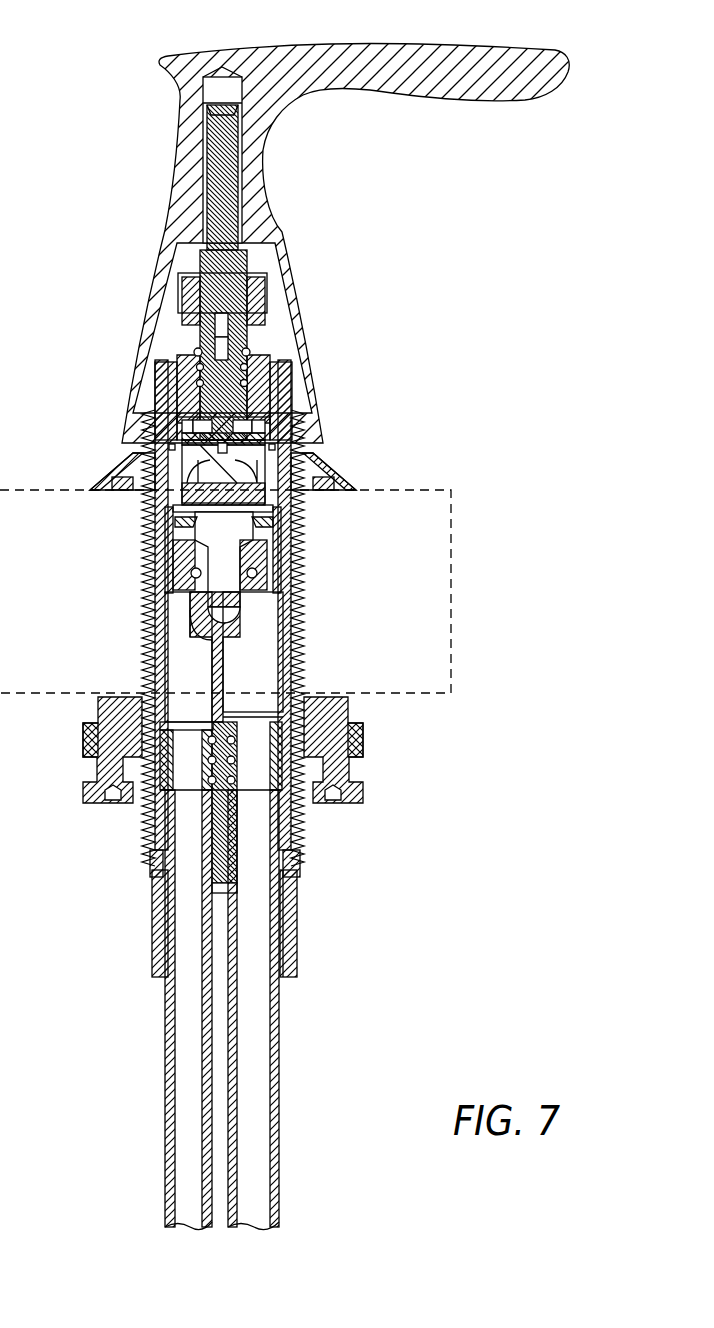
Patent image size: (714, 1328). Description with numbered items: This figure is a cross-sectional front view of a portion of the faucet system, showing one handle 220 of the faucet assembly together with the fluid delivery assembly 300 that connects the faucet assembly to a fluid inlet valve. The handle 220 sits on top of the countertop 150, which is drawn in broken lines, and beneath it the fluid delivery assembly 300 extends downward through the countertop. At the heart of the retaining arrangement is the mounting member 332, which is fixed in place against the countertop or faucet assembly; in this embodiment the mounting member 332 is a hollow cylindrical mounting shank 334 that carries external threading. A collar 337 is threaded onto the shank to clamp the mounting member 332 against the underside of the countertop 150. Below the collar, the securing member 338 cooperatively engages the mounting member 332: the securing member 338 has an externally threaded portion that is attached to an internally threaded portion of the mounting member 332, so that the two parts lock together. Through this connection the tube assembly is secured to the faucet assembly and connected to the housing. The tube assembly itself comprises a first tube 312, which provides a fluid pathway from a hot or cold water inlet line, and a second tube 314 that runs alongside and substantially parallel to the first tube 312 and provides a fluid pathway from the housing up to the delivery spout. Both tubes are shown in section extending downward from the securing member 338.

The handle 220 is at (422, 40).
The fluid delivery assembly 300 is at (139, 914).
The mounting member 332 is at (152, 595).
The mounting shank 334 is at (303, 675).
The countertop 150 is at (452, 592).
The collar 337 is at (363, 738).
The securing member 338 is at (288, 930).
The second tube 314 is at (187, 1112).
The first tube 312 is at (253, 1112).